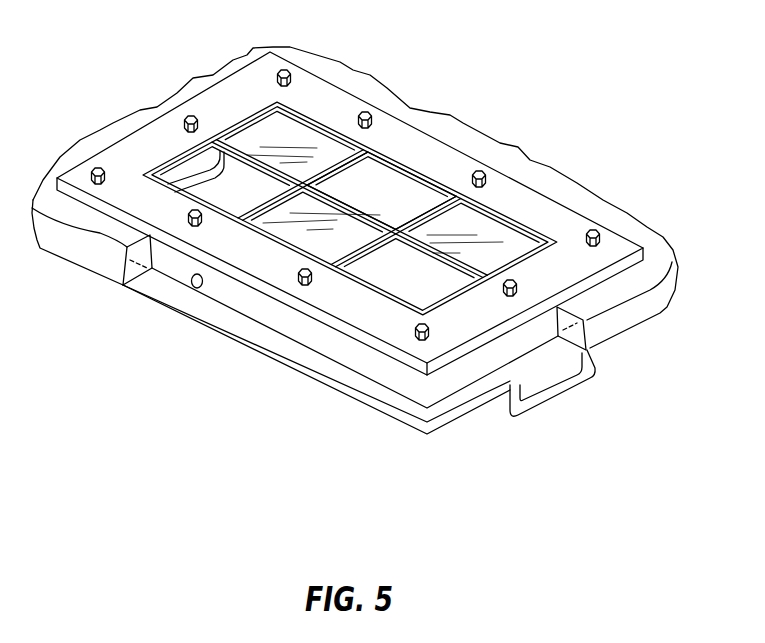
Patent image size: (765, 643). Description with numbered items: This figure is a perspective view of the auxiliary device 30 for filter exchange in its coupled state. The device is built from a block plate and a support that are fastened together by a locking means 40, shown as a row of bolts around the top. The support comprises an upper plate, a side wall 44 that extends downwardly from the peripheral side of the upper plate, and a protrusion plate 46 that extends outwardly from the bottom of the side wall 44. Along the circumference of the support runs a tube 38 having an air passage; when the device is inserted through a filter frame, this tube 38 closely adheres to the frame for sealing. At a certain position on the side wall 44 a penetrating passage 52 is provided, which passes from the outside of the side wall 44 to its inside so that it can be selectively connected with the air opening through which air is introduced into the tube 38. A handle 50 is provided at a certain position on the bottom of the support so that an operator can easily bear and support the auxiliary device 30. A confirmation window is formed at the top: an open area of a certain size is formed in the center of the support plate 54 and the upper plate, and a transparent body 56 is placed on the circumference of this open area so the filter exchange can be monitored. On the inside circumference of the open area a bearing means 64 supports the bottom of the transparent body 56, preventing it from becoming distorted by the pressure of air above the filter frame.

The auxiliary device for filter exchange 30 is at (572, 46).
The tube 38 is at (650, 277).
The locking means 40 is at (186, 117).
The side wall 44 is at (450, 378).
The protrusion plate 46 is at (340, 392).
The handle 50 is at (583, 383).
The penetrating passage 52 is at (193, 290).
The support plate 54 is at (572, 217).
The transparent body 56 is at (392, 190).
The bearing means 64 is at (316, 160).